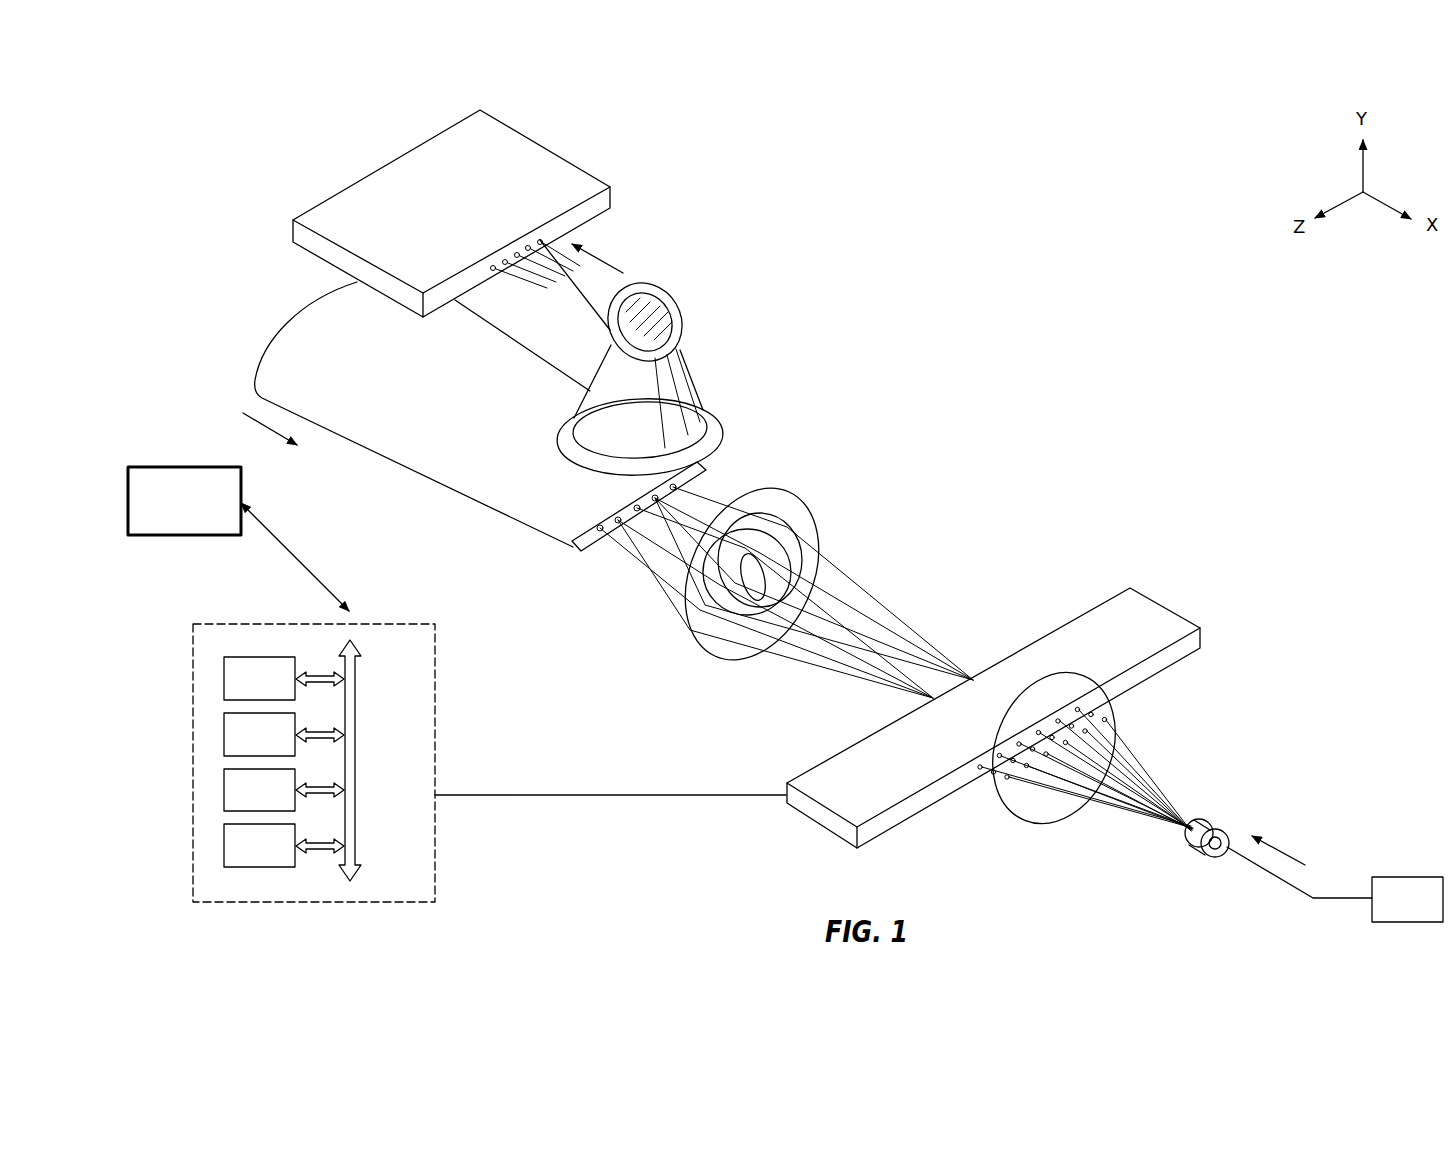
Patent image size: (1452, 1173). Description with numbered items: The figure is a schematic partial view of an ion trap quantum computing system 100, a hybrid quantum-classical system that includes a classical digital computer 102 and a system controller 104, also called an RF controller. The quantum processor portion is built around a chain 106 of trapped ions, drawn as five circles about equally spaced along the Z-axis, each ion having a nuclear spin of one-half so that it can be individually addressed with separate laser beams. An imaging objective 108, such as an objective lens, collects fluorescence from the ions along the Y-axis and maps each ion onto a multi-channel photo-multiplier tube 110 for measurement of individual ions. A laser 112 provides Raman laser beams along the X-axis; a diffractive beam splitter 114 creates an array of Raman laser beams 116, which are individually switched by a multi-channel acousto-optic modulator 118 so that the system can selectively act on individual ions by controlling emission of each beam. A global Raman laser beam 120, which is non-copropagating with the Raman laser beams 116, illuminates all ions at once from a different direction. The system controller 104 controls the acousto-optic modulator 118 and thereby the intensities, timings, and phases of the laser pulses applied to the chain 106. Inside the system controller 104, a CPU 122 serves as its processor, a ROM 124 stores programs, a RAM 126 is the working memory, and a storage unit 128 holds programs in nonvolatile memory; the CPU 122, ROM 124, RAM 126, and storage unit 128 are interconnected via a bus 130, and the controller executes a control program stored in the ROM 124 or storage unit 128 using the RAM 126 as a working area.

The ion trap quantum computing system 100 is at (949, 404).
The classical computer 102 is at (200, 513).
The system controller 104 is at (489, 748).
The chain of trapped ions 106 is at (617, 553).
The imaging objective 108 is at (687, 373).
The multi-channel photo-multiplier tube 110 is at (542, 143).
The laser 112 is at (1425, 912).
The diffractive beam splitter 114 is at (1207, 815).
The Raman laser beams 116 is at (707, 657).
The multi-channel acousto-optic modulator 118 is at (1163, 605).
The global Raman laser beam 120 is at (414, 498).
The CPU 122 is at (277, 692).
The ROM 124 is at (277, 748).
The RAM 126 is at (277, 803).
The storage unit 128 is at (277, 859).
The bus 130 is at (357, 762).